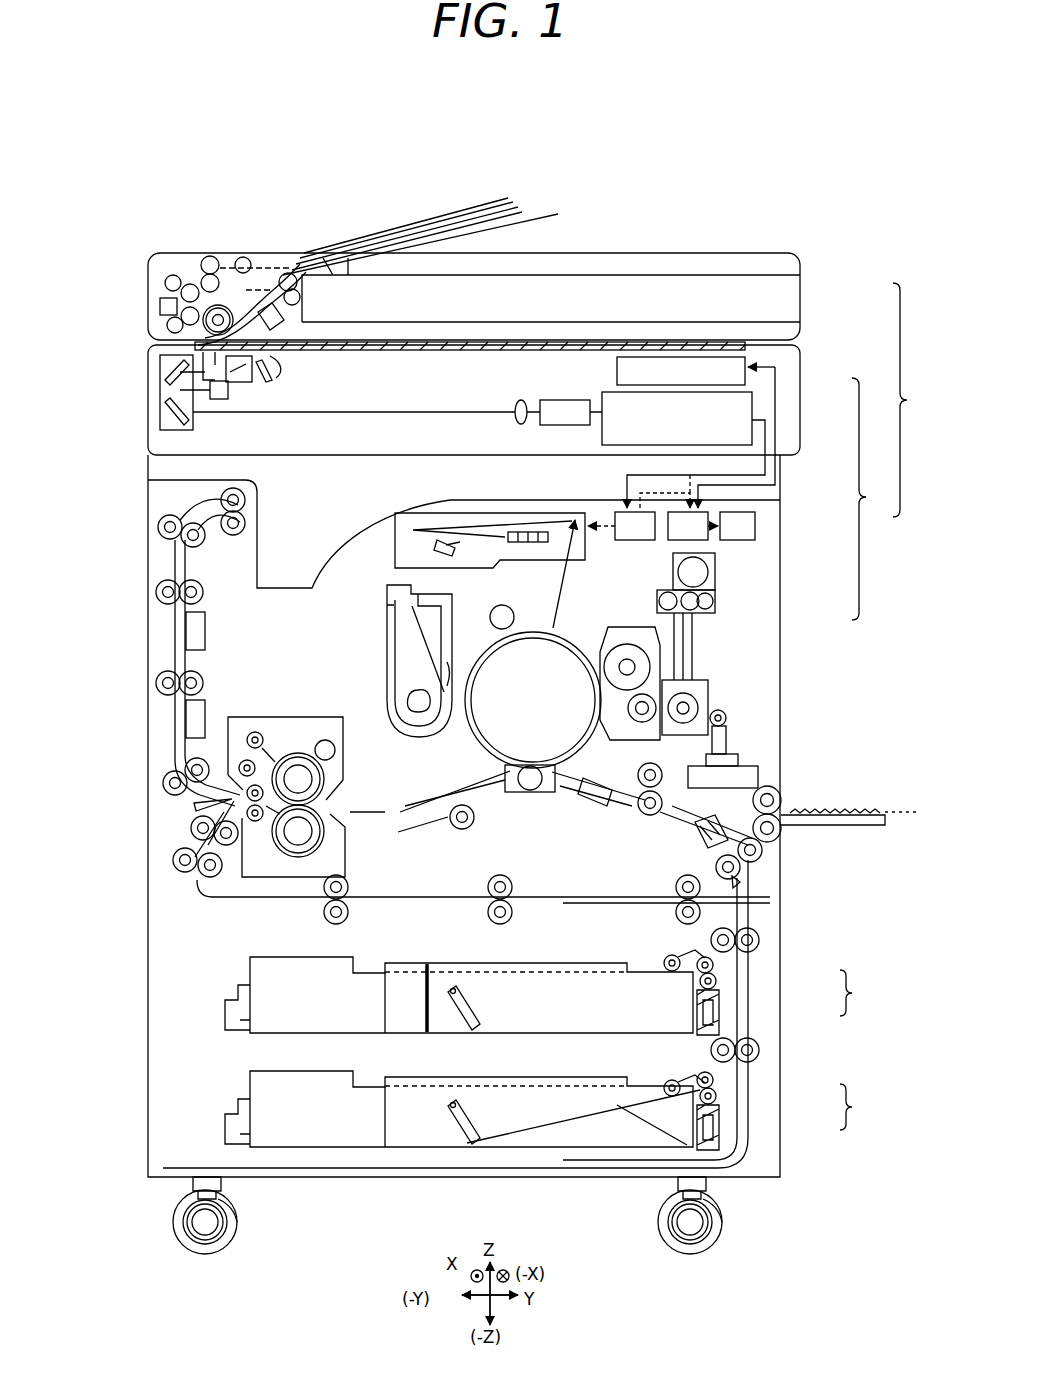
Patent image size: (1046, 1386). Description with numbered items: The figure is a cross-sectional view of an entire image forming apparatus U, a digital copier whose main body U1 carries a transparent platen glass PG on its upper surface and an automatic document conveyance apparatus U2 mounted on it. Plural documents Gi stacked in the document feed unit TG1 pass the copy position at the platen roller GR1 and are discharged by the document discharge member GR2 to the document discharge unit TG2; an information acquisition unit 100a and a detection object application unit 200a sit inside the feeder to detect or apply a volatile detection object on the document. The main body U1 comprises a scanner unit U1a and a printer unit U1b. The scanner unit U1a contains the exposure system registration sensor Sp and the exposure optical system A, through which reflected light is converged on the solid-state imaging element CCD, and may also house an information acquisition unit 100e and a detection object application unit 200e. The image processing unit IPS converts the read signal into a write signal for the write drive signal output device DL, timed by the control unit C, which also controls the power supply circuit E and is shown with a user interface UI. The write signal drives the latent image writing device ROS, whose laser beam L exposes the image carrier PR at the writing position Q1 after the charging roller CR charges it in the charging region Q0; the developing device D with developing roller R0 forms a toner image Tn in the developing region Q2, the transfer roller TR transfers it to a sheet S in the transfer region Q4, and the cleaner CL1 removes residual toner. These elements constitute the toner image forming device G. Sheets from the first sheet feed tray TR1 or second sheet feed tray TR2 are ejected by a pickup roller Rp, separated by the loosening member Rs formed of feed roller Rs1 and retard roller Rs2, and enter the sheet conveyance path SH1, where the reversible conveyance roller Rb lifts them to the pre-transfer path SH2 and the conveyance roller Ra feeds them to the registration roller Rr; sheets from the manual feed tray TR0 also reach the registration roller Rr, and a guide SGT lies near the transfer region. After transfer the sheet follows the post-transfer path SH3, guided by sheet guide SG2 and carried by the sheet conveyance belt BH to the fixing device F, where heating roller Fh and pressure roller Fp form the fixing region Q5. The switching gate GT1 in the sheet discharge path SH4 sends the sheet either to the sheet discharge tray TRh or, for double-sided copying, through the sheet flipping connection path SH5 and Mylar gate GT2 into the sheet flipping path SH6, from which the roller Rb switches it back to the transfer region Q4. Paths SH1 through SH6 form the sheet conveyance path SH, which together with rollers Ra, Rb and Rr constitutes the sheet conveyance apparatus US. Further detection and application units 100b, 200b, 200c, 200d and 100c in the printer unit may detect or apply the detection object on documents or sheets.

The image forming apparatus U is at (909, 400).
The digital copier main body U1 is at (874, 499).
The scanner unit U1a is at (800, 390).
The printer unit U1b is at (782, 632).
The automatic document conveyance apparatus U2 is at (800, 290).
The exposure optical system A is at (146, 348).
The documents Gi is at (492, 212).
The document feed unit TG1 is at (540, 232).
The document discharge unit TG2 is at (490, 322).
The platen roller GR1 is at (218, 303).
The document discharge member GR2 is at (302, 300).
The information acquisition unit 100a is at (175, 290).
The detection object application unit 200a is at (280, 268).
The exposure system registration sensor Sp is at (180, 340).
The platen glass PG is at (400, 352).
The information acquisition unit 100e is at (165, 398).
The detection object application unit 200e is at (275, 372).
The solid-state imaging element CCD is at (397, 412).
The user interface UI is at (696, 432).
The image processing unit IPS is at (683, 450).
The write drive signal output device DL is at (621, 526).
The control unit C is at (693, 526).
The power supply circuit E is at (737, 526).
The latent image writing device ROS is at (490, 540).
The laser beam L is at (575, 578).
The sheet discharge tray TRh is at (340, 481).
The image carrier PR is at (505, 762).
The charging roller CR is at (515, 592).
The cleaner CL1 is at (382, 646).
The developing device D is at (726, 648).
The developing roller R0 is at (620, 640).
The charging region Q0 is at (548, 630).
The latent image writing position Q1 is at (548, 640).
The developing region Q2 is at (598, 688).
The transfer region Q4 is at (515, 774).
The fixing region Q5 is at (322, 800).
The detection object application unit 200d is at (545, 765).
The transfer roller TR is at (525, 792).
The toner image Tn is at (596, 756).
The registration roller Rr is at (662, 770).
The sheet guide SGT is at (590, 810).
The pre-transfer sheet conveyance path SH2 is at (672, 826).
The post-transfer sheet conveyance path SH3 is at (468, 848).
The sheet discharge path SH4 is at (178, 640).
The sheet flipping connection path SH5 is at (595, 898).
The sheet flipping path SH6 is at (620, 1168).
The sheet conveyance path SH1 is at (750, 1012).
The sheet conveyance path SH is at (752, 1110).
The sheet guide SG2 is at (495, 790).
The sheet conveyance belt BH is at (373, 800).
The sheet S is at (884, 808).
The fixing device F is at (338, 712).
The heating roller Fh is at (298, 760).
The pressure roller Fp is at (322, 840).
The switching gate GT1 is at (210, 806).
The Mylar gate GT2 is at (738, 898).
The conveyance roller Ra is at (160, 598).
The conveyance roller Rb is at (760, 945).
The pickup roller Rp is at (662, 950).
The loosening member Rs is at (859, 1050).
The feed roller Rs1 is at (714, 968).
The retard roller Rs2 is at (716, 985).
The manual sheet feed tray TR0 is at (812, 814).
The first sheet feed tray TR1 is at (459, 995).
The second sheet feed tray TR2 is at (462, 1109).
The information acquisition unit 100b is at (207, 635).
The detection object application unit 200b is at (186, 722).
The detection object application unit 200c is at (620, 820).
The information acquisition unit 100c is at (782, 843).
The toner image forming device G is at (312, 672).
The sheet conveyance apparatus US is at (765, 1177).